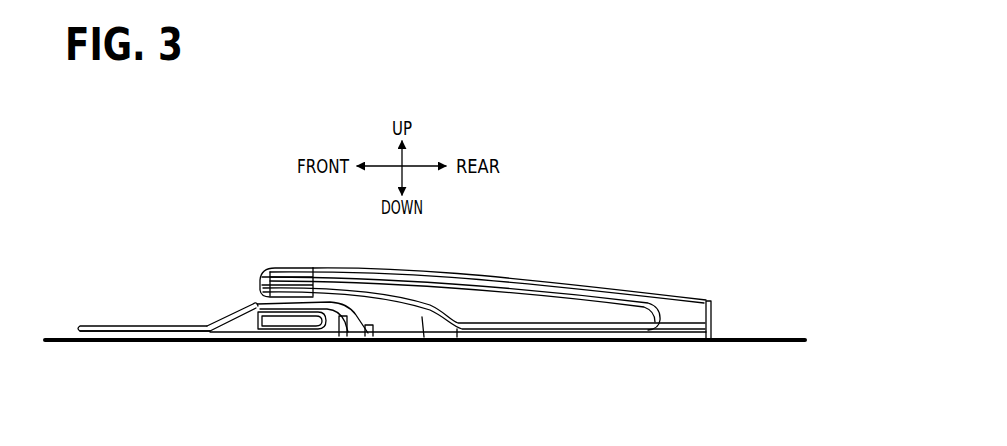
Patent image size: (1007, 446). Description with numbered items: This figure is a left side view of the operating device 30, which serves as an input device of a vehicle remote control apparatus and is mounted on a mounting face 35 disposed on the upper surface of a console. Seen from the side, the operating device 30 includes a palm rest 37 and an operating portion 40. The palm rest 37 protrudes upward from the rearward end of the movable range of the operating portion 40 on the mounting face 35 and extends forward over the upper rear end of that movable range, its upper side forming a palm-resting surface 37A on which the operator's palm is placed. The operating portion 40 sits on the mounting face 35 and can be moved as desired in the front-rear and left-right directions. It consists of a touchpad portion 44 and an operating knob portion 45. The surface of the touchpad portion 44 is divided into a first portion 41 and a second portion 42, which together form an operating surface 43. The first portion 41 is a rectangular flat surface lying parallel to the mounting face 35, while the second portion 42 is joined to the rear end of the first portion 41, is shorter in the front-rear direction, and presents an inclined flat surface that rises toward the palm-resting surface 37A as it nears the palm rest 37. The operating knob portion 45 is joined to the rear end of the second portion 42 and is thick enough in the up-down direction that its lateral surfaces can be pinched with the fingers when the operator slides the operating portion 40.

The operating device 30 is at (692, 238).
The mounting face 35 is at (799, 331).
The palm rest 37 is at (699, 299).
The palm-resting surface 37A is at (500, 276).
The operating portion 40 is at (97, 314).
The first portion 41 is at (157, 326).
The second portion 42 is at (233, 313).
The operating surface 43 is at (230, 243).
The touchpad portion 44 is at (233, 327).
The operating knob portion 45 is at (330, 329).